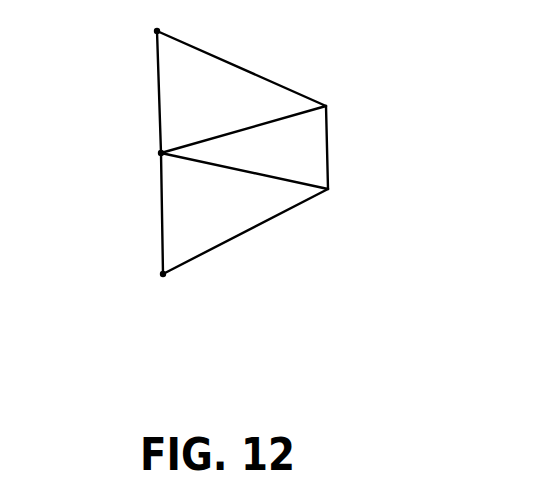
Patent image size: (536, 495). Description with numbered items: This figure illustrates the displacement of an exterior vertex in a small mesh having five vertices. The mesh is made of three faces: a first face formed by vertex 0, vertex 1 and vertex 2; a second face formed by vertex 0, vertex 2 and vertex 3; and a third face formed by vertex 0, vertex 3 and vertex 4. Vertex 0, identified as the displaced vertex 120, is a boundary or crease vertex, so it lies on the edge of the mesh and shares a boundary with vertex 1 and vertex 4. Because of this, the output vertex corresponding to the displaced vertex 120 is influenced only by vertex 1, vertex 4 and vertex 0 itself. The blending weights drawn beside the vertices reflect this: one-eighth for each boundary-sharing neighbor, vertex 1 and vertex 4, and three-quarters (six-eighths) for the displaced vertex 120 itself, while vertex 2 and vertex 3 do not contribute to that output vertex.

The vertex (0) 120 is at (158, 155).
The vertex 0 is at (149, 157).
The vertex 1 is at (146, 30).
The vertex 2 is at (338, 101).
The vertex 3 is at (340, 190).
The vertex 4 is at (153, 283).